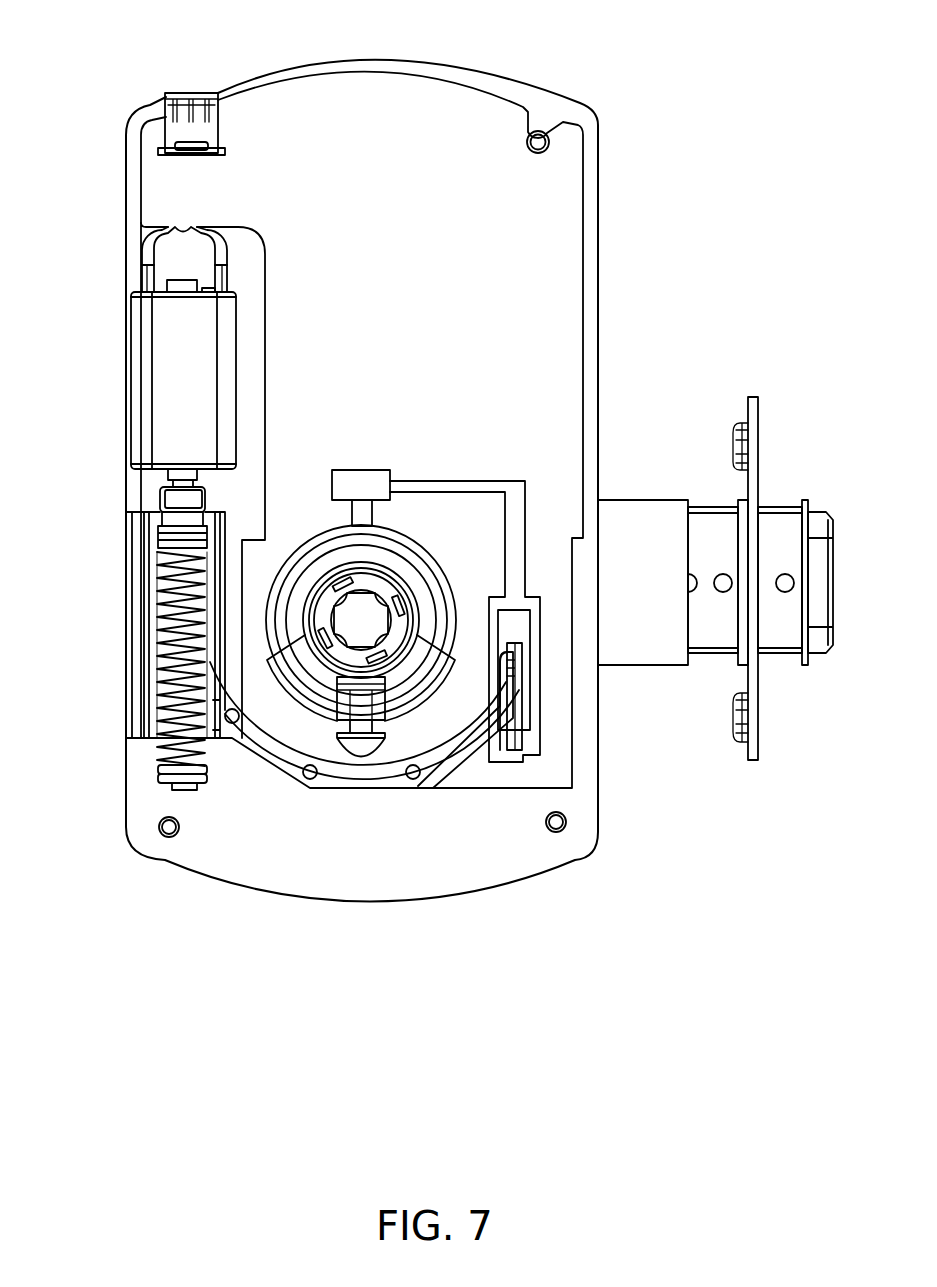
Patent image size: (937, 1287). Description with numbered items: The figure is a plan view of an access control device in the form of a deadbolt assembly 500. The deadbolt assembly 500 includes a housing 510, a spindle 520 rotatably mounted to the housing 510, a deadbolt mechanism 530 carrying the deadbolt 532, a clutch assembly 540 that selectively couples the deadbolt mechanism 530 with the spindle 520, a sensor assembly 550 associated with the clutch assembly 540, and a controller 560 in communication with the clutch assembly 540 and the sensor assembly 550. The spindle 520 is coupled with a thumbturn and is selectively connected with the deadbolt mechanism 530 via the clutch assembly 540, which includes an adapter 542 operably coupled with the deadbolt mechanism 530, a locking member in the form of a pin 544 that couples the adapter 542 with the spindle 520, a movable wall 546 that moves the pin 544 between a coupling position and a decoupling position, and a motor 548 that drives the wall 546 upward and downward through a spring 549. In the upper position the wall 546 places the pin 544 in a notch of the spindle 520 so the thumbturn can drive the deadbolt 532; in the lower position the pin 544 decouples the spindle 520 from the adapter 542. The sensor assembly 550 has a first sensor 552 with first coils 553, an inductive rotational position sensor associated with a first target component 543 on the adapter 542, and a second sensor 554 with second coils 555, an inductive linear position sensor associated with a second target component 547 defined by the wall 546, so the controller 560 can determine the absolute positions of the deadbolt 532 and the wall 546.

The deadbolt assembly 500 is at (127, 49).
The housing 510 is at (585, 112).
The spindle 520 is at (340, 655).
The deadbolt mechanism 530 is at (706, 406).
The deadbolt 532 is at (836, 522).
The clutch assembly 540 is at (98, 705).
The adapter 542 is at (411, 680).
The first target component 543 is at (458, 692).
The pin 544 is at (368, 762).
The movable wall 546 is at (315, 785).
The second target component 547 is at (512, 738).
The motor 548 is at (138, 354).
The spring 549 is at (152, 575).
The sensor assembly 550 is at (452, 406).
The first sensor 552 is at (317, 486).
The first coils 553 is at (321, 552).
The second sensor 554 is at (530, 556).
The second coils 555 is at (531, 617).
The controller 560 is at (372, 470).